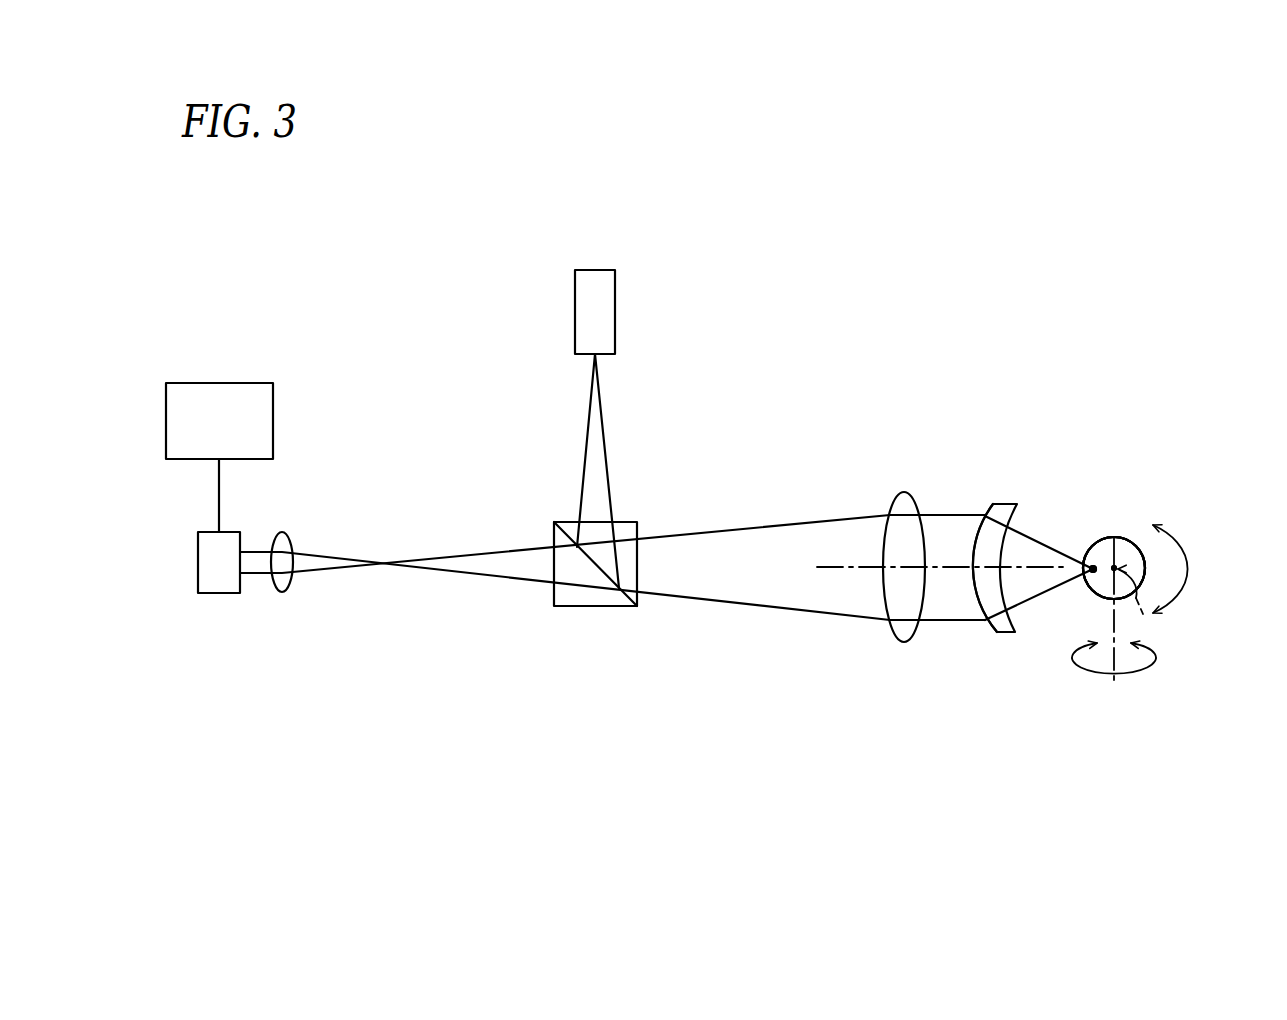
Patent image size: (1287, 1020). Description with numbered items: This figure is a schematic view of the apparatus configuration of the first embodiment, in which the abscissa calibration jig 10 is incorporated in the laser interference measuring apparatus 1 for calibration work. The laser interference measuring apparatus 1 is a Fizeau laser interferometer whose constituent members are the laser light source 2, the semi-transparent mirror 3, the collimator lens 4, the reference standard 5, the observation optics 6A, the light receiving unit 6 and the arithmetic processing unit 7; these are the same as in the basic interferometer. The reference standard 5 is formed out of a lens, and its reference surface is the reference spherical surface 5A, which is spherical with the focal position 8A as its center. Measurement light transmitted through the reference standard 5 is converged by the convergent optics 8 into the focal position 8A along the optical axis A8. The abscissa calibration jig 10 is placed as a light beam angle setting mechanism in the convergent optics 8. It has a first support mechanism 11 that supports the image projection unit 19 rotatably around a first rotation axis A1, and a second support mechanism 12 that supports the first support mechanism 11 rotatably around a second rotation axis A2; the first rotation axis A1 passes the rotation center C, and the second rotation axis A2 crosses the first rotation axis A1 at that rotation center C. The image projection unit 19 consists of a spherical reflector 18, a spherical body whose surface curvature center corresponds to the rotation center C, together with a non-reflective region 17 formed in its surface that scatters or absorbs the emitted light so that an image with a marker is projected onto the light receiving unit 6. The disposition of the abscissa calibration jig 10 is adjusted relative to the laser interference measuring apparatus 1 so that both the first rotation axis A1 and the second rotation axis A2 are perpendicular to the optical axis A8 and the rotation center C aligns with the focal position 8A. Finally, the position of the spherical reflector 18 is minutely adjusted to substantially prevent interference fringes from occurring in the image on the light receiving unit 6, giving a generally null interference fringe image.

The laser interference measuring apparatus 1 is at (648, 247).
The laser light source 2 is at (592, 270).
The semi-transparent mirror 3 is at (637, 606).
The collimator lens 4 is at (905, 642).
The reference standard 5 is at (1010, 632).
The reference spherical surface 5A is at (1019, 503).
The light receiving unit 6 is at (219, 593).
The observation optics 6A is at (282, 592).
The arithmetic processing unit 7 is at (219, 383).
The convergent optics 8 is at (1045, 466).
The focal position 8A is at (1114, 568).
The abscissa calibration jig 10 is at (1090, 426).
The first support mechanism 11 is at (1193, 576).
The second support mechanism 12 is at (1093, 680).
The non-reflective region 17 is at (1089, 578).
The spherical reflector 18 is at (1100, 541).
The image projection unit 19 is at (1114, 462).
The first rotation axis A1 is at (1144, 616).
The second rotation axis A2 is at (1116, 627).
The optical axis A8 is at (942, 551).
The rotation center C is at (1120, 532).